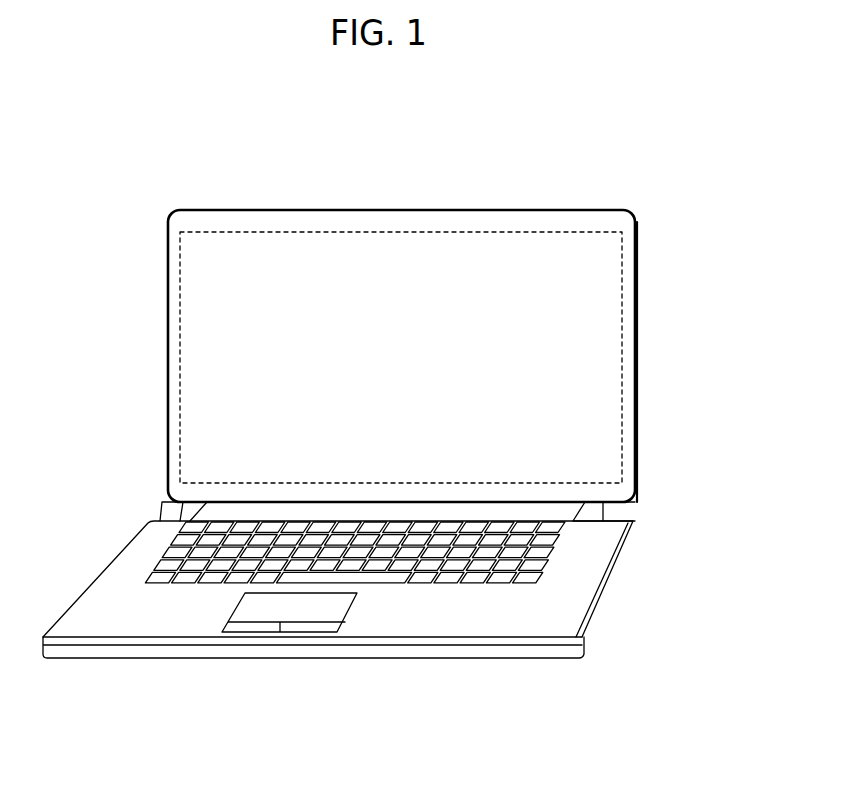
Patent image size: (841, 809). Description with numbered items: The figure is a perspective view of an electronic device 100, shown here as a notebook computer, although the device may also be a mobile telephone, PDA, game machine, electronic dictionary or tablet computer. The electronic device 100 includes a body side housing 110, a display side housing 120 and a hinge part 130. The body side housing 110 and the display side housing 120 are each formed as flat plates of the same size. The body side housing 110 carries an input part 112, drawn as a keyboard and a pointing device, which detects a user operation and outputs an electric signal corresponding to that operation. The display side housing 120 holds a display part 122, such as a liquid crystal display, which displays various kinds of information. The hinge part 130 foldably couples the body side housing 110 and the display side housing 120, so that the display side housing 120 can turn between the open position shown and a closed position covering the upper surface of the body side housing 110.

The electronic device 100 is at (367, 156).
The body side housing 110 is at (488, 650).
The input part 112 is at (380, 585).
The display side housing 120 is at (637, 340).
The display part 122 is at (588, 284).
The hinge part 130 is at (637, 506).